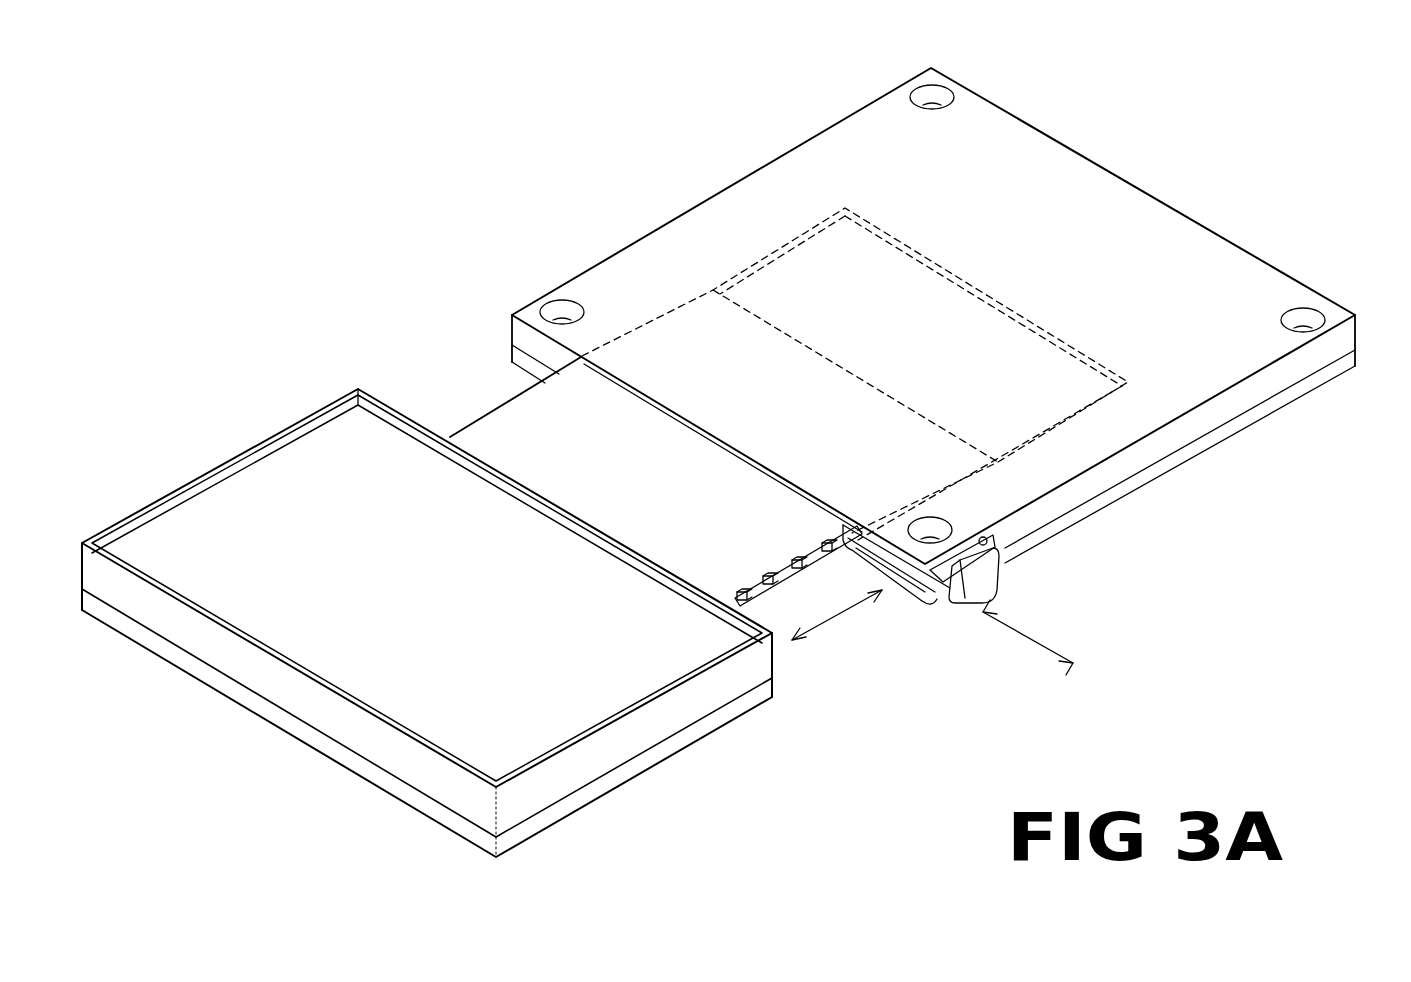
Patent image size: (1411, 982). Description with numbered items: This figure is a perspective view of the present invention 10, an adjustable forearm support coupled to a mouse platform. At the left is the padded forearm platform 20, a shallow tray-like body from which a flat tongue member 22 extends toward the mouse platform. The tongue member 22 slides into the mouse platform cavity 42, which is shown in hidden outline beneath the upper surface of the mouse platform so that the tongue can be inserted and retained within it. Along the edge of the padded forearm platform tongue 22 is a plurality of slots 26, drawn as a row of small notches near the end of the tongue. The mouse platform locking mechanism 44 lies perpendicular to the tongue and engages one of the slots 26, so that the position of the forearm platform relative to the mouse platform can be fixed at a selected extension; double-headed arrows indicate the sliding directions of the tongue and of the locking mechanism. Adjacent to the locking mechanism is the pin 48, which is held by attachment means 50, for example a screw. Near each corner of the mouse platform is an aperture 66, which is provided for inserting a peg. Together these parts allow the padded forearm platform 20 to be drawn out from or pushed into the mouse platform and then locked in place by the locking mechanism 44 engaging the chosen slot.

The present invention 10 is at (465, 285).
The padded forearm platform 20 is at (553, 782).
The tongue member 22 is at (522, 423).
The slots 26 is at (745, 592).
The mouse platform cavity 42 is at (935, 303).
The mouse platform locking mechanism 44 is at (938, 600).
The pin 48 is at (965, 556).
The attachment means 50 is at (997, 548).
The aperture 66 is at (1305, 318).